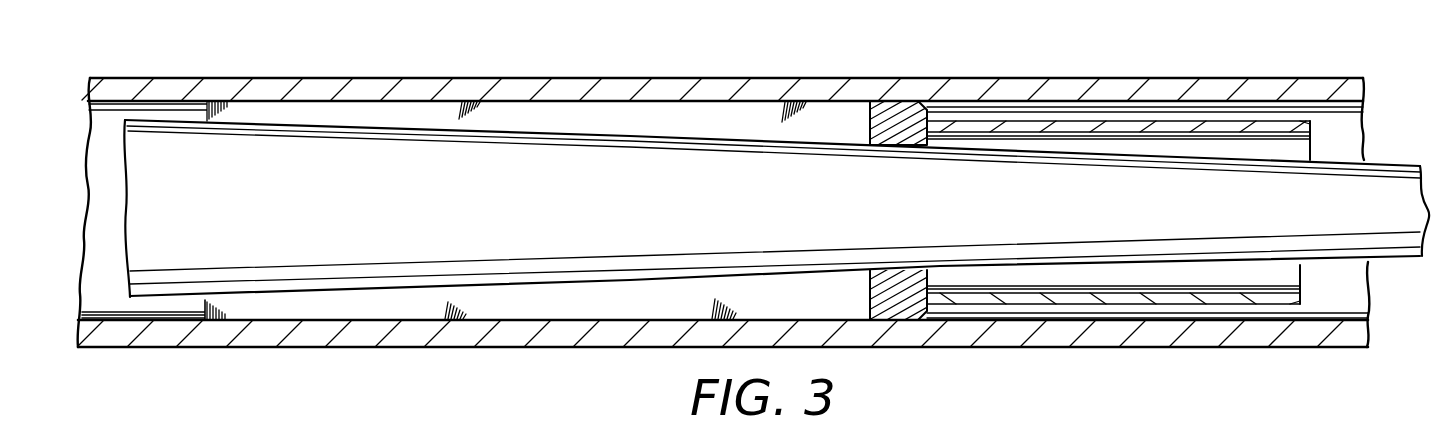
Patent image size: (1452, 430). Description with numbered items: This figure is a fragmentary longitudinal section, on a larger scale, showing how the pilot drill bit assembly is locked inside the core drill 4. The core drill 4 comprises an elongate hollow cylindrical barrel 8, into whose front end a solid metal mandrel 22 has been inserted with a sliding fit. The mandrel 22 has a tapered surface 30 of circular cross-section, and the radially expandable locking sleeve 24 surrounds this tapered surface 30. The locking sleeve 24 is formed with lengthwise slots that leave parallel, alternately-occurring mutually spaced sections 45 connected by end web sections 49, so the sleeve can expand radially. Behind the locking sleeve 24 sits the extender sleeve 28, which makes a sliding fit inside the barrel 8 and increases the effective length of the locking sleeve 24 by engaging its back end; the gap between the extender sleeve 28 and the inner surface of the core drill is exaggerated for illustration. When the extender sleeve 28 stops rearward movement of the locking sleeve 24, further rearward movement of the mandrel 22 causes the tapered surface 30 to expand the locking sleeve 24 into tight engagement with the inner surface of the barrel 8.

The core drill 4 is at (724, 189).
The barrel 8 is at (716, 90).
The mandrel 22 is at (350, 299).
The locking sleeve 24 is at (417, 112).
The extender sleeve 28 is at (1180, 120).
The tapered surface 30 is at (548, 283).
The mutually spaced section 45 is at (572, 110).
The end web section 49 is at (902, 113).